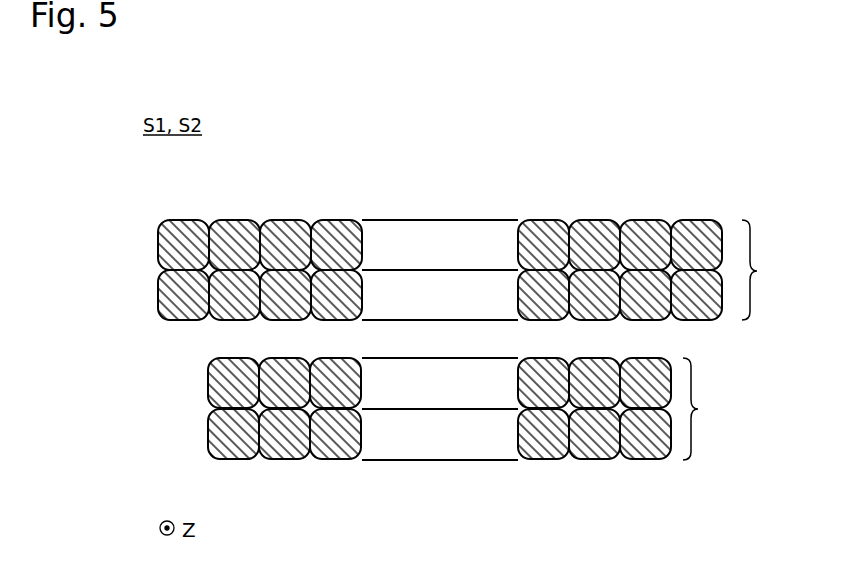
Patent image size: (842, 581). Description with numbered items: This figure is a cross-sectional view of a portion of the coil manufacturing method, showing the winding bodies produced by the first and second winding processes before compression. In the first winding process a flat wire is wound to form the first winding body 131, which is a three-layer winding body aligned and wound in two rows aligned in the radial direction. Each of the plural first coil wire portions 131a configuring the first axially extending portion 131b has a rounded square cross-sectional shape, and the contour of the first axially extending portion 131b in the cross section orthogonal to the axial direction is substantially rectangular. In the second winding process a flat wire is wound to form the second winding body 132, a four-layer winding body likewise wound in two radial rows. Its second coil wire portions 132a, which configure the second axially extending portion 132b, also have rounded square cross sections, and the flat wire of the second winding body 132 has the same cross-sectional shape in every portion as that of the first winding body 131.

The second winding body 132 is at (475, 270).
The second coil wire portions 132a is at (689, 228).
The second axially extending portion 132b is at (284, 212).
The first winding body 131 is at (470, 409).
The first coil wire portions 131a is at (650, 452).
The first axially extending portion 131b is at (286, 468).